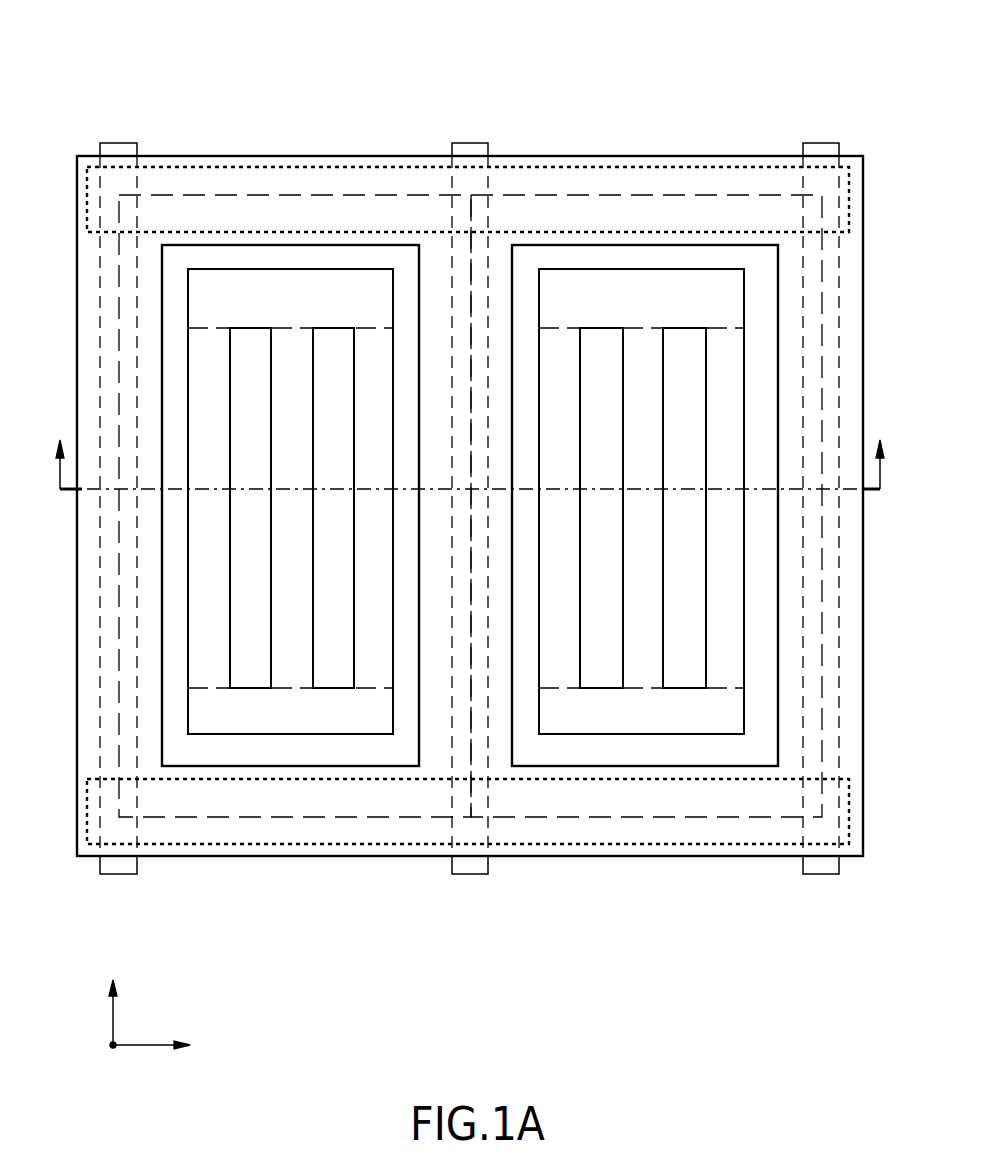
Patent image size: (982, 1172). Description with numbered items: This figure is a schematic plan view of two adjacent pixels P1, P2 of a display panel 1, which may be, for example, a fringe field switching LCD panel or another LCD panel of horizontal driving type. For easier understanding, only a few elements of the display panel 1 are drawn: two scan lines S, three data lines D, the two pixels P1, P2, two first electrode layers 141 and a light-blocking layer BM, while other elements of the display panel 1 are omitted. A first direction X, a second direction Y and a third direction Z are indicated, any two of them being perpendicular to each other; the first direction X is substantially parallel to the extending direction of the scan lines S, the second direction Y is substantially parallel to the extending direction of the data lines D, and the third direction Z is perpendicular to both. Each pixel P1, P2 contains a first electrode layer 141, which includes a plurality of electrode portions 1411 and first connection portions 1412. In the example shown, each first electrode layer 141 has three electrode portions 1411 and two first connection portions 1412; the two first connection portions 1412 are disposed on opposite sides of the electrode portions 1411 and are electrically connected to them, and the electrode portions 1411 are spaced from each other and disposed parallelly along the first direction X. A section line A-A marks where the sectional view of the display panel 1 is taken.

The display panel 1 is at (262, 44).
The light-blocking layer BM is at (583, 156).
The scan line S is at (677, 163).
The data line D is at (125, 143).
The pixel P1 is at (258, 195).
The pixel P2 is at (727, 195).
The first electrode layer 141 is at (470, 599).
The electrode portion 1411 is at (217, 662).
The first connection portion 1412 is at (290, 718).